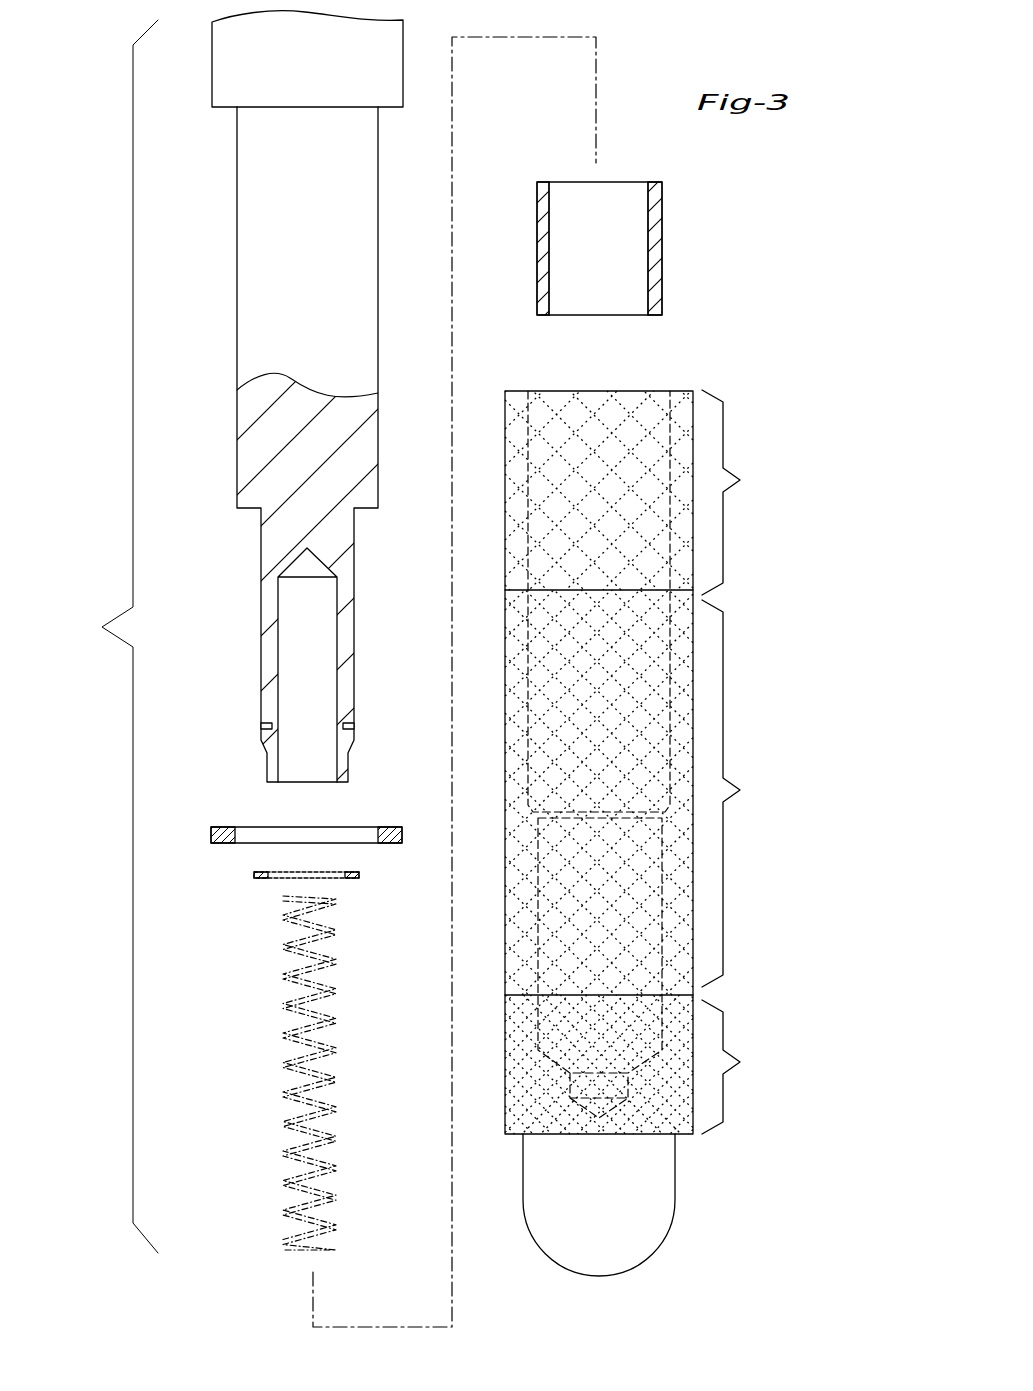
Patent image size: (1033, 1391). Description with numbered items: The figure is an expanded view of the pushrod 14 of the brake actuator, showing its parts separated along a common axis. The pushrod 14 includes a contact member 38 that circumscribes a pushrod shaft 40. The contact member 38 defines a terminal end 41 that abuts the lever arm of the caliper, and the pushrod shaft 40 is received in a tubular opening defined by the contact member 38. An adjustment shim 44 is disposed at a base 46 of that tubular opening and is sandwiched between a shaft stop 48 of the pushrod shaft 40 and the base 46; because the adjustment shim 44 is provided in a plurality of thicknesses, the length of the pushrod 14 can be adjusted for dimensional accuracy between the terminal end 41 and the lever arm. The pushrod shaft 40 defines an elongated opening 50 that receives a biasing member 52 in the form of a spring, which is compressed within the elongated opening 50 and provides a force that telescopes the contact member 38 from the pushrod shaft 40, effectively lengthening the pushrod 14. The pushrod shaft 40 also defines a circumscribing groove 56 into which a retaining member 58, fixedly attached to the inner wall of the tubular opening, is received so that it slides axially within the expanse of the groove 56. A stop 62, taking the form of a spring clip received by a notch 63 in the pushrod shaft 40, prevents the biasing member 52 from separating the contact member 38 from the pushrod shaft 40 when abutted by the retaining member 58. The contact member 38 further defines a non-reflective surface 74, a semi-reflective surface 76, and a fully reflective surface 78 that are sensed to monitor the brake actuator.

The pushrod 14 is at (118, 628).
The contact member 38 is at (668, 1196).
The pushrod shaft 40 is at (316, 62).
The terminal end 41 is at (583, 1265).
The adjustment shim 44 is at (222, 826).
The base 46 is at (693, 392).
The shaft stop 48 is at (229, 108).
The elongated opening 50 is at (317, 722).
The biasing member 52 is at (281, 1007).
The circumscribing groove 56 is at (311, 247).
The retaining member 58 is at (662, 265).
The stop 62 is at (262, 880).
The notch 63 is at (354, 728).
The non-reflective surface 74 is at (740, 1062).
The semi-reflective surface 76 is at (740, 790).
The fully reflective surface 78 is at (740, 480).